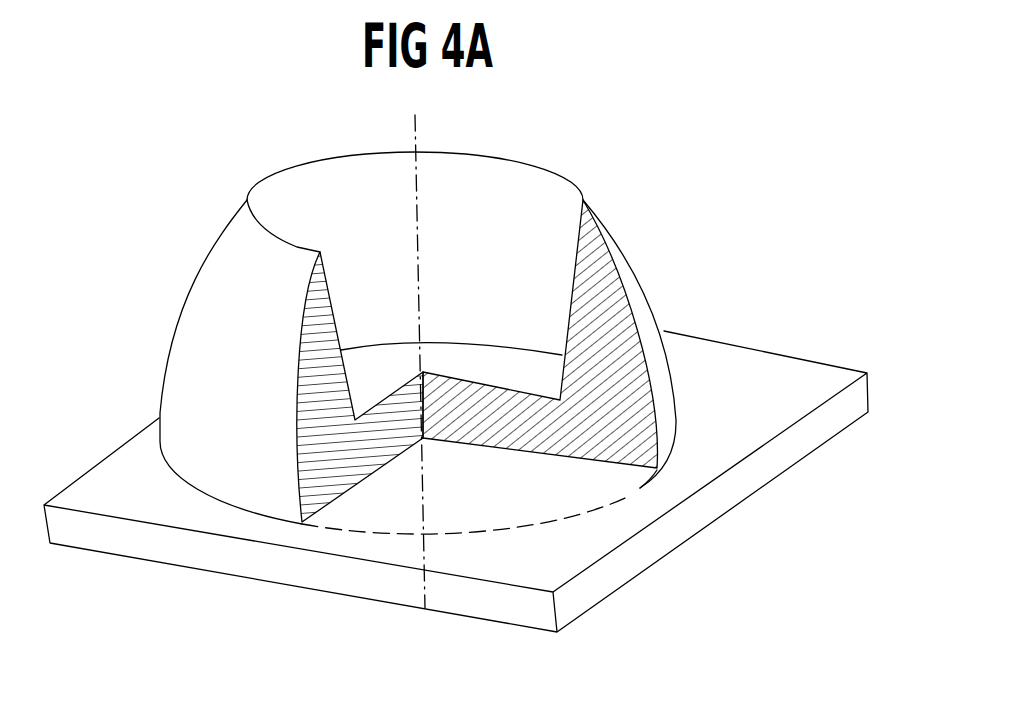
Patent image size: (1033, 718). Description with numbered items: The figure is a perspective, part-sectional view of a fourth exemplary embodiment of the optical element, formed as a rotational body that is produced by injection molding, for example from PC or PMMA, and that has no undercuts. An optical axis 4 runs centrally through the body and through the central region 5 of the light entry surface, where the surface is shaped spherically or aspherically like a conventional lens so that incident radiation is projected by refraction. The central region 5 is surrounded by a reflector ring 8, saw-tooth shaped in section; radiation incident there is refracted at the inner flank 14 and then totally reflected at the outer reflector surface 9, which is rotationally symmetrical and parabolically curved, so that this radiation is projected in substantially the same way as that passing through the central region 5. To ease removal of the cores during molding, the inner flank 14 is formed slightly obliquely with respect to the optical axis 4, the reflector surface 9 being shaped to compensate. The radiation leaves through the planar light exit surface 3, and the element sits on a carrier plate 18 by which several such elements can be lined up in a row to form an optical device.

The light exit surface 3 is at (617, 472).
The optical axis 4 is at (414, 131).
The central region 5 is at (470, 360).
The reflector ring 8 is at (605, 300).
The reflector surface 9 is at (672, 360).
The inner flank 14 is at (578, 245).
The carrier plate 18 is at (123, 546).